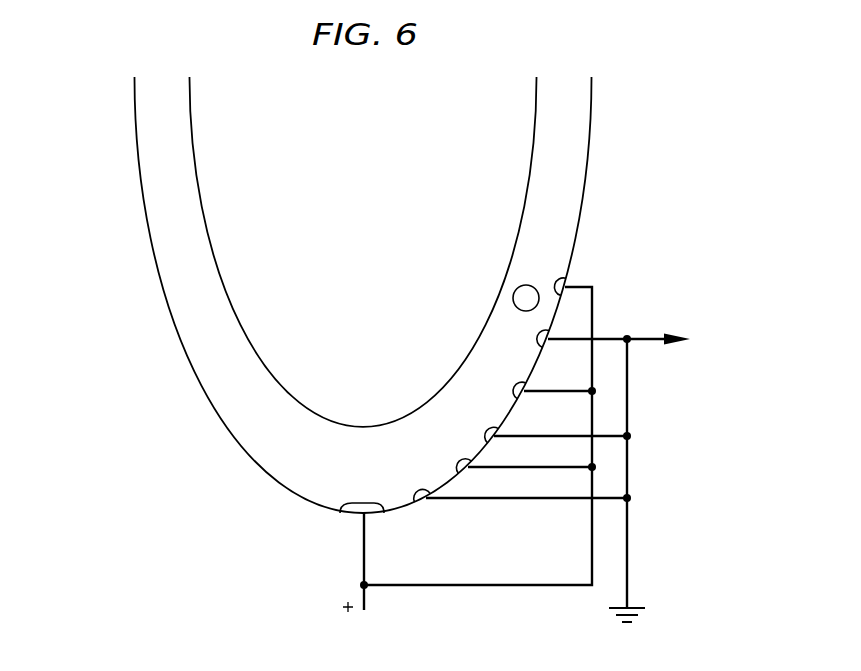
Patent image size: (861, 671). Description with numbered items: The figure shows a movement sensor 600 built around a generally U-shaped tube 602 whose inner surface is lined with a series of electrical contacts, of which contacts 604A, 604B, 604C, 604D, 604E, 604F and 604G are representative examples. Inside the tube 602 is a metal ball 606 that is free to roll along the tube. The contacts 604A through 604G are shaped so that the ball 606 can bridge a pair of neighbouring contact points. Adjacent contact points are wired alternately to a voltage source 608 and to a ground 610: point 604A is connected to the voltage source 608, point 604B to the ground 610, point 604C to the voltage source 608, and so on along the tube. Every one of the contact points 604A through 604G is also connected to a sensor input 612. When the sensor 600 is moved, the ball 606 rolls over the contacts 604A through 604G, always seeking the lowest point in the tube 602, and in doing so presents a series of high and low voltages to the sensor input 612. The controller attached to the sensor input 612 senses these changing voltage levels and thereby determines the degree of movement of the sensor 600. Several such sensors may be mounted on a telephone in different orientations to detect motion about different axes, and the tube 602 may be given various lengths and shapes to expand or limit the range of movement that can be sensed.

The movement sensor 600 is at (94, 356).
The U-shaped tube 602 is at (138, 134).
The electrical contact 604A is at (360, 501).
The electrical contact 604B is at (418, 489).
The electrical contact 604C is at (460, 462).
The electrical contact 604D is at (490, 432).
The electrical contact 604E is at (518, 389).
The electrical contact 604F is at (542, 338).
The electrical contact 604G is at (561, 281).
The metal ball 606 is at (522, 285).
The voltage source 608 is at (363, 593).
The ground 610 is at (628, 565).
The sensor input 612 is at (649, 340).